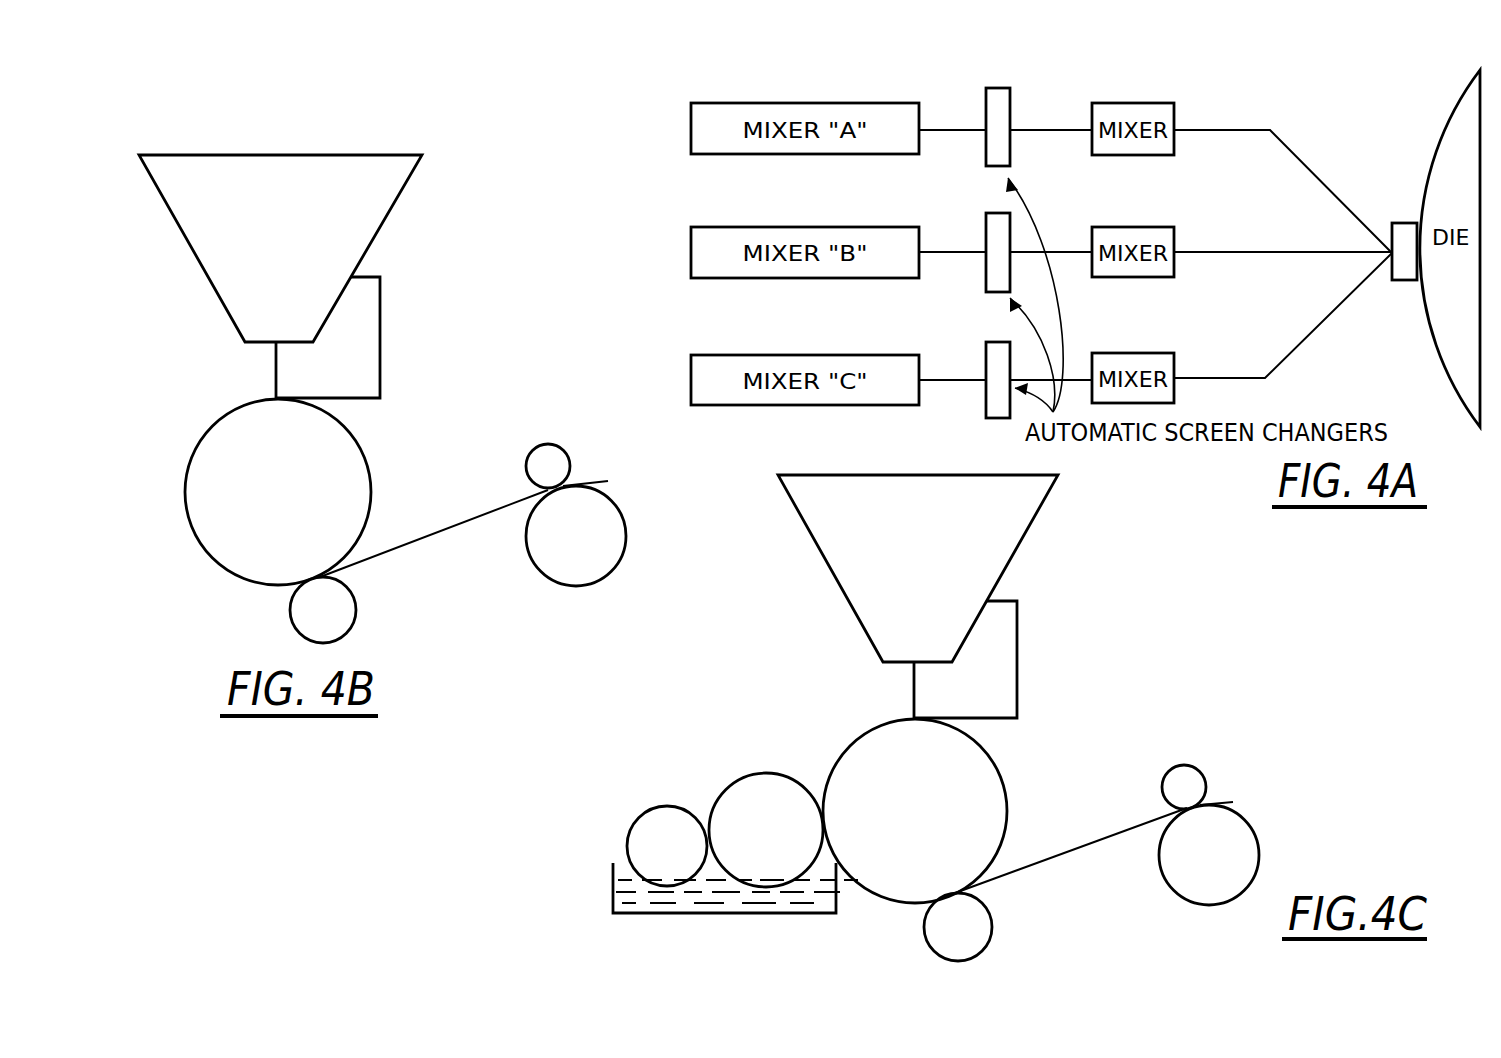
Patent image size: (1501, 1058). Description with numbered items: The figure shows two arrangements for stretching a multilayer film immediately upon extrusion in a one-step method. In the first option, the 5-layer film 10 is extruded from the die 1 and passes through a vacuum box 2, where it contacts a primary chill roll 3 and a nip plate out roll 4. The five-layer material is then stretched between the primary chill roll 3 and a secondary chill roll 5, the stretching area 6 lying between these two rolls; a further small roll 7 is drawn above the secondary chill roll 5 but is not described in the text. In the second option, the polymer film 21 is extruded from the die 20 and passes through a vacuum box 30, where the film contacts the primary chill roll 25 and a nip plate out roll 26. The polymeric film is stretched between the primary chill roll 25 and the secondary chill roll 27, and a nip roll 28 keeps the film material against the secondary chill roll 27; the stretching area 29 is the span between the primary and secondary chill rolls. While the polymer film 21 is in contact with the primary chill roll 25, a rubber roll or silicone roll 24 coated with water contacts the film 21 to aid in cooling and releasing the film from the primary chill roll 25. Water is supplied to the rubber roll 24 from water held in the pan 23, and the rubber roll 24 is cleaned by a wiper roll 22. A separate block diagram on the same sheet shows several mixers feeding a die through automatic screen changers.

In FIG. 4B, the die 1 is at (392, 208).
In FIG. 4B, the vacuum box 2 is at (380, 320).
In FIG. 4B, the 5-layer film 10 is at (276, 370).
In FIG. 4B, the primary chill roll 3 is at (371, 478).
In FIG. 4B, the nip plate out roll 4 is at (357, 611).
In FIG. 4B, the secondary chill roll 5 is at (565, 587).
In FIG. 4B, the stretching area 6 is at (462, 527).
In FIG. 4B, the roll 7 is at (548, 444).
In FIG. 4C, the die 20 is at (1028, 528).
In FIG. 4C, the polymer film 21 is at (914, 686).
In FIG. 4C, the vacuum box 30 is at (1017, 628).
In FIG. 4C, the primary chill roll 25 is at (1004, 760).
In FIG. 4C, the rubber roll or silicone roll 24 is at (766, 773).
In FIG. 4C, the wiper roll 22 is at (667, 805).
In FIG. 4C, the pan 23 is at (613, 893).
In FIG. 4C, the nip plate out roll 26 is at (992, 926).
In FIG. 4C, the stretching area 29 is at (1098, 838).
In FIG. 4C, the nip roll 28 is at (1205, 770).
In FIG. 4C, the secondary chill roll 27 is at (1258, 856).